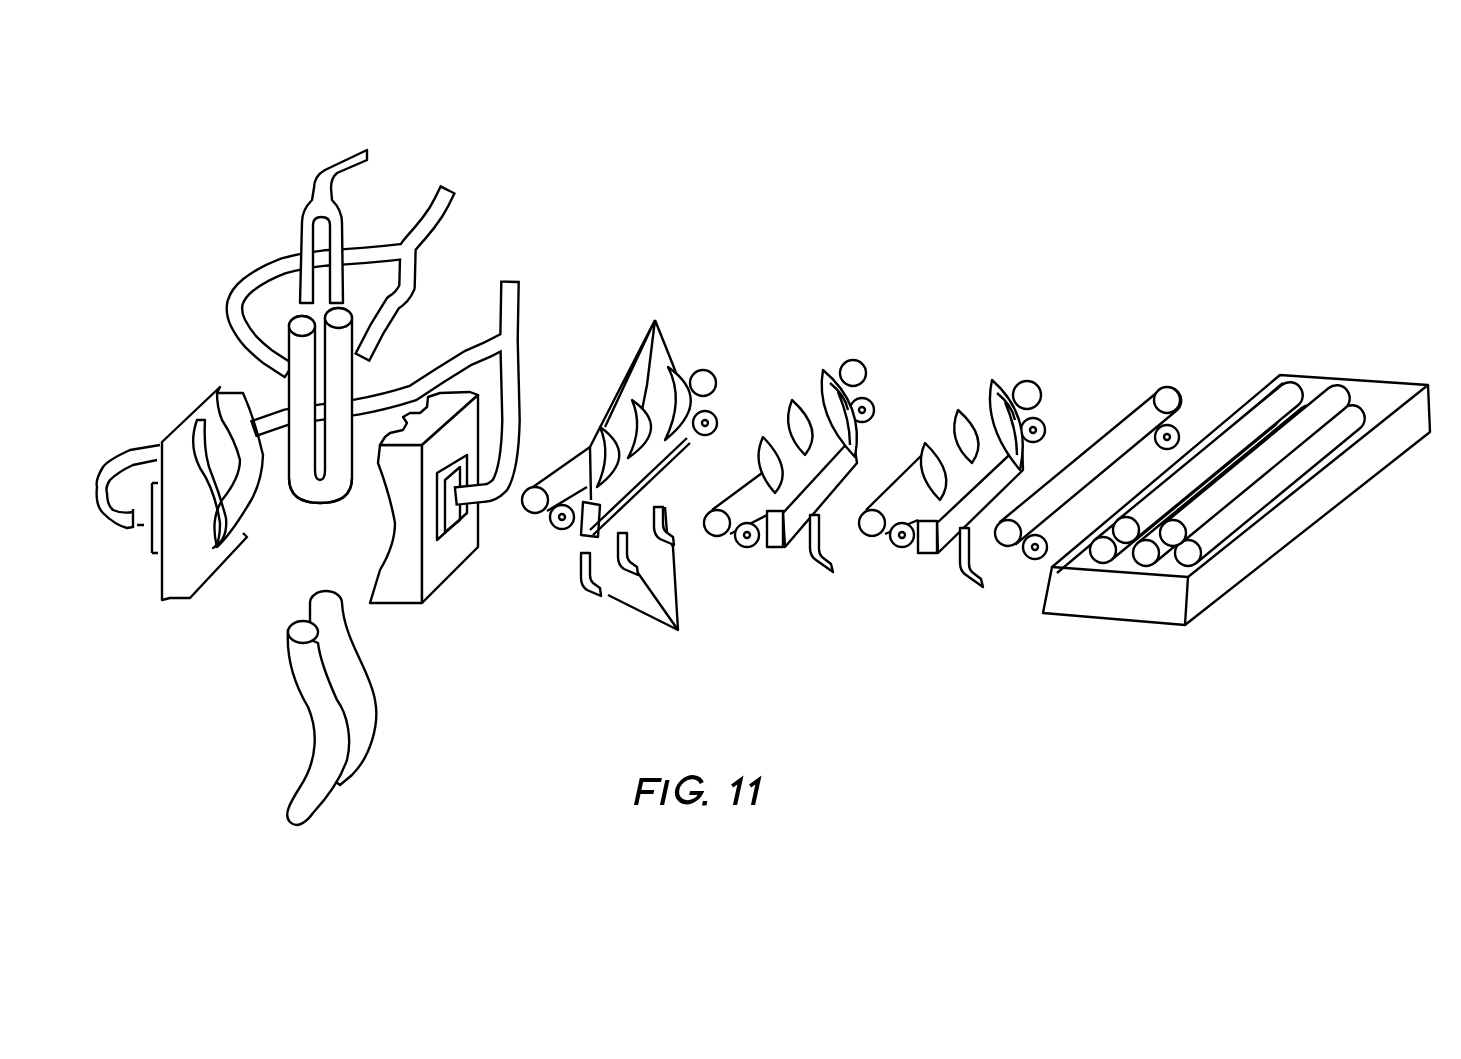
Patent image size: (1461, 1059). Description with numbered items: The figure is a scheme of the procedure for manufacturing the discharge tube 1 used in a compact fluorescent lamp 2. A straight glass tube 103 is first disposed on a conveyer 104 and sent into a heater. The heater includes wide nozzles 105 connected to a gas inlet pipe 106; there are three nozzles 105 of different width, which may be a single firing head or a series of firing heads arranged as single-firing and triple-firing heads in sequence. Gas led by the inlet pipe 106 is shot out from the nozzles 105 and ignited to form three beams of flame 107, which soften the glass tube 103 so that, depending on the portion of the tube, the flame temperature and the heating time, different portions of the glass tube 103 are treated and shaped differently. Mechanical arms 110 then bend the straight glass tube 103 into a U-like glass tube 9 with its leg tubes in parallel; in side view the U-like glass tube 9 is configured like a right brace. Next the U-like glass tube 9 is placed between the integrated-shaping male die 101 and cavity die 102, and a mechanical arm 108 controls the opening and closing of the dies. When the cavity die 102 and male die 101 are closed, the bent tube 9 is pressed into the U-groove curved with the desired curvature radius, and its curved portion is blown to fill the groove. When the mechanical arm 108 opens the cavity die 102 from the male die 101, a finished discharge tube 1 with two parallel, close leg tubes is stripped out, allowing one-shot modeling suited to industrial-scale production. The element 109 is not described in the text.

The discharge tube 1 is at (283, 703).
The compact fluorescent lamp 2 is at (320, 503).
The U-like glass tube 9 is at (287, 413).
The male die 101 is at (170, 577).
The cavity die 102 is at (402, 580).
The glass tube 103 is at (1312, 412).
The conveyer 104 is at (723, 417).
The wide nozzle 105 is at (580, 540).
The gas inlet pipe 106 is at (678, 630).
The flame 107 is at (655, 320).
The mechanical arm 108 is at (516, 318).
The forked tube 109 is at (317, 177).
The mechanical arm 110 is at (452, 208).